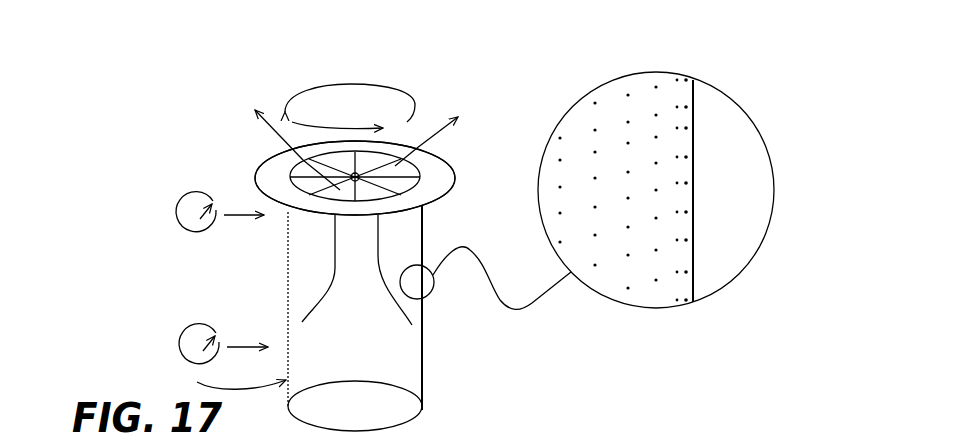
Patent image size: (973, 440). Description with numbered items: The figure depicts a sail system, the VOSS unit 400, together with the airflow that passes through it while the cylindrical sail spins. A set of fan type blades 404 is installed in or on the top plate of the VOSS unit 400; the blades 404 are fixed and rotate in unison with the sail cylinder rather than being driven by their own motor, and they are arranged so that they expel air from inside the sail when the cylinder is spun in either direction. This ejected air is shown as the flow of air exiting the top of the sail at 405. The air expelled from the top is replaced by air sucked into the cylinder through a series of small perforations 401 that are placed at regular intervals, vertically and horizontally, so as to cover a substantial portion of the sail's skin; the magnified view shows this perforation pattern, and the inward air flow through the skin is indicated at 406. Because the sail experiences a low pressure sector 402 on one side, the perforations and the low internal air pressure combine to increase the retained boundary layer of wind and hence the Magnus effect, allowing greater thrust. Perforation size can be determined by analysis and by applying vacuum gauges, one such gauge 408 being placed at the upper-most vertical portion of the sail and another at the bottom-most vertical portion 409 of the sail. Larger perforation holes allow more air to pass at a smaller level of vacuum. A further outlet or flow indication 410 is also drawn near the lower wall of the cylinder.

The VOSS unit 400 is at (229, 75).
The perforations 401 is at (678, 241).
The low pressure sector 402 is at (508, 439).
The fan type blades 404 is at (408, 180).
The air flow exiting the top of the sail 405 is at (462, 116).
The air flow through the perforations 406 is at (426, 369).
The vacuum gauge at upper-most vertical portion 408 is at (196, 193).
The bottom-most vertical portion of the sail 409 is at (200, 325).
The outlet 410 is at (428, 378).